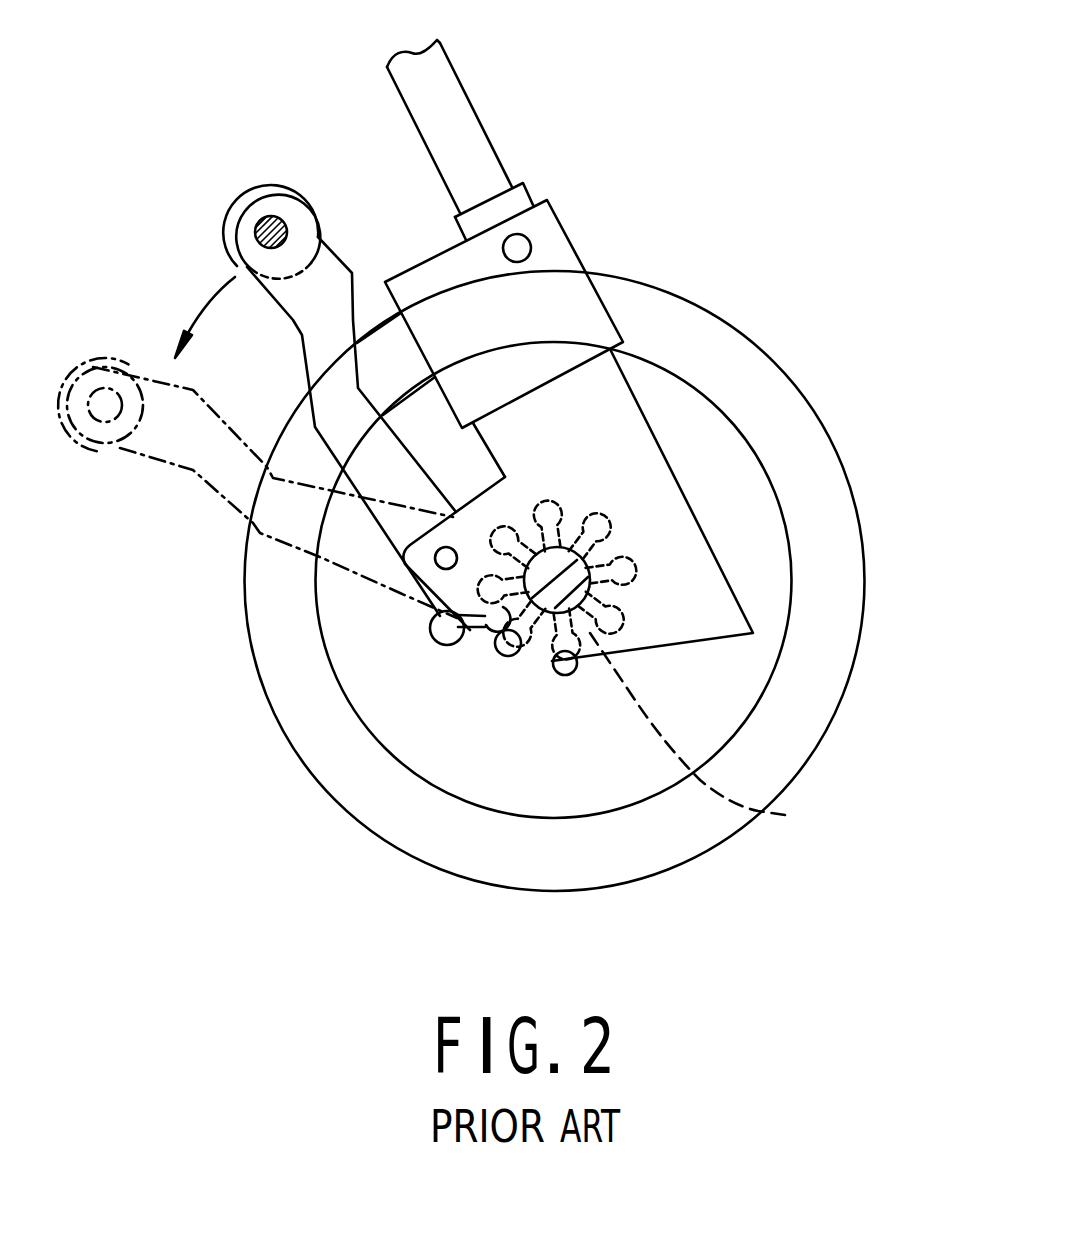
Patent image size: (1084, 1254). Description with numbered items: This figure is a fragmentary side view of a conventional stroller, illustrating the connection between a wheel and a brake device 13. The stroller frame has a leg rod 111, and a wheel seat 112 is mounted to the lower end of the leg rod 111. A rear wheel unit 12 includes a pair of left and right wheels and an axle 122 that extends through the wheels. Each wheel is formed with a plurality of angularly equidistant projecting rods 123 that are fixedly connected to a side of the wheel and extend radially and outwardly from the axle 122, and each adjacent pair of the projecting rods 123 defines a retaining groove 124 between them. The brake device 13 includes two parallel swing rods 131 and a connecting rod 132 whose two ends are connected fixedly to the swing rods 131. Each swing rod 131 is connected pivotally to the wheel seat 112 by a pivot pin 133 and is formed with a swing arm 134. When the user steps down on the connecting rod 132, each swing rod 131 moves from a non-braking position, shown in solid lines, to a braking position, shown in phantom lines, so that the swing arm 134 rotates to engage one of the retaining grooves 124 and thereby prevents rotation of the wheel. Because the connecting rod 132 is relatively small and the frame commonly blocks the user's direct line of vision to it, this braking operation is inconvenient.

The leg rod 111 is at (457, 102).
The wheel seat 112 is at (617, 385).
The rear wheel unit 12 is at (903, 575).
The axle 122 is at (590, 562).
The projecting rod 123 is at (581, 767).
The retaining groove 124 is at (721, 735).
The brake device 13 is at (285, 128).
The swing rod 131 is at (338, 216).
The connecting rod 132 is at (256, 223).
The pivot pin 133 is at (442, 562).
The swing arm 134 is at (414, 764).